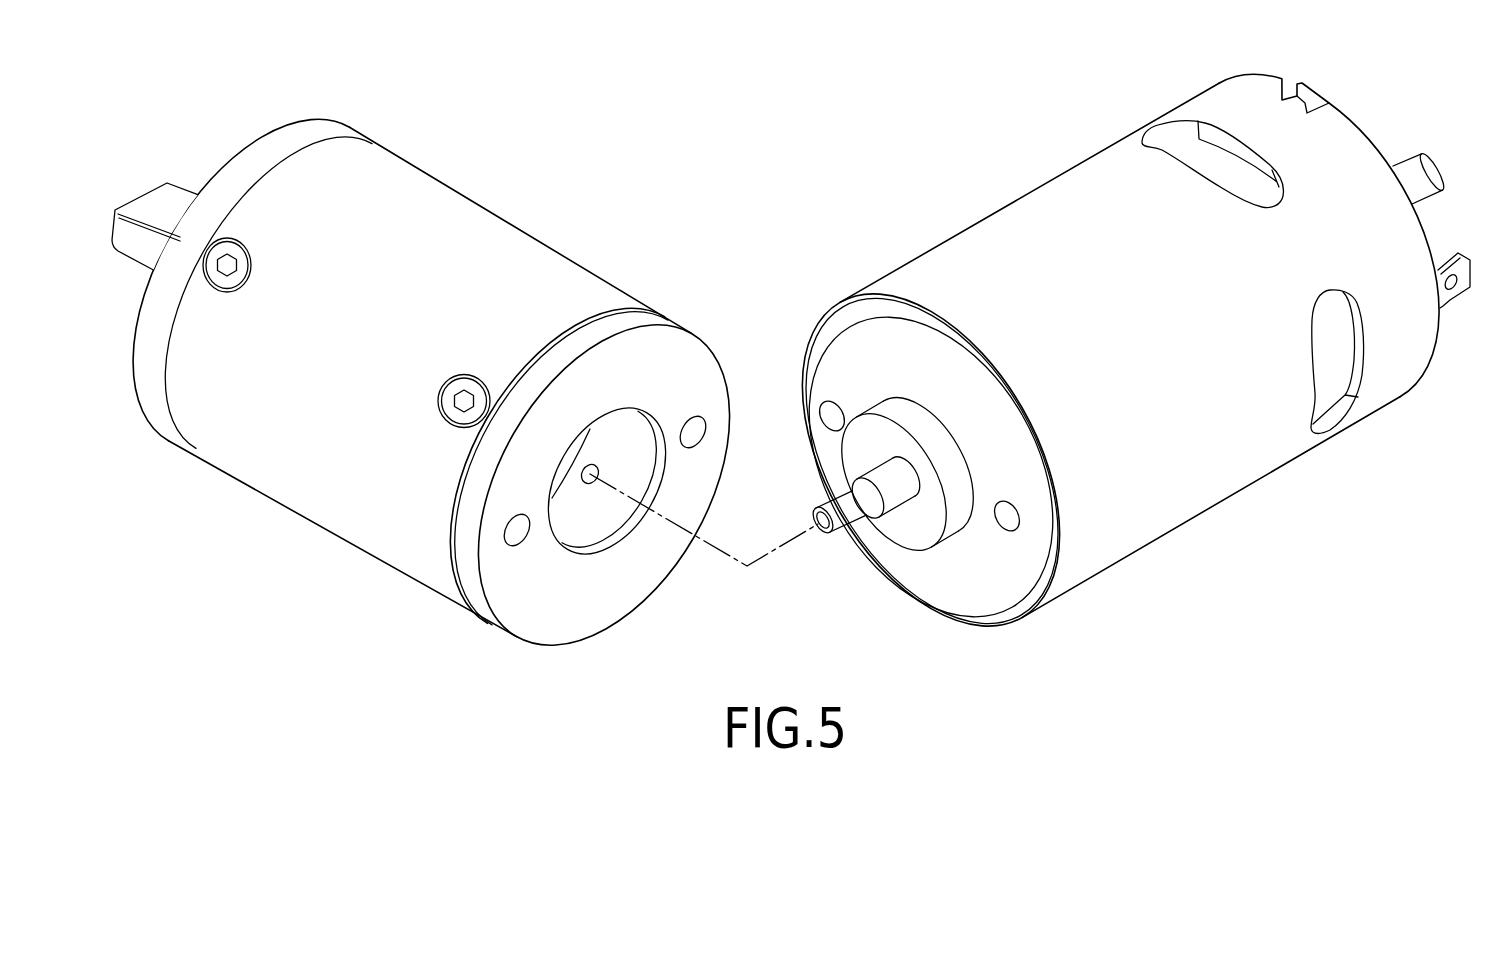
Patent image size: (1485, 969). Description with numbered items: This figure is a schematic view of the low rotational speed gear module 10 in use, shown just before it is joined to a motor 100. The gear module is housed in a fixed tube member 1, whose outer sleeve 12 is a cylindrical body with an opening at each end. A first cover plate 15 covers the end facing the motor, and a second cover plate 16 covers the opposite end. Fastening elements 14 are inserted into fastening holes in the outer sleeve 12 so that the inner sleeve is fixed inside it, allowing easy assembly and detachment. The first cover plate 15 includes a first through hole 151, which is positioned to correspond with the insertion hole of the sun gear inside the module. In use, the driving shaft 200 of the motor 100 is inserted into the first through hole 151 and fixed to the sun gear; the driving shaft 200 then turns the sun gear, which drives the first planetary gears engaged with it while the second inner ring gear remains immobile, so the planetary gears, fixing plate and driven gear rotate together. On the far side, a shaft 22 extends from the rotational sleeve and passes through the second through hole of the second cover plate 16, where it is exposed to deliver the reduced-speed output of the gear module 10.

The fixed tube member 1 is at (303, 517).
The low rotational speed gear module 10 is at (528, 207).
The outer sleeve 12 is at (280, 483).
The fastening elements 14 is at (227, 263).
The first cover plate 15 is at (567, 597).
The first through hole 151 is at (607, 527).
The second cover plate 16 is at (307, 135).
The shaft 22 is at (158, 200).
The motor 100 is at (1055, 205).
The driving shaft 200 is at (822, 523).